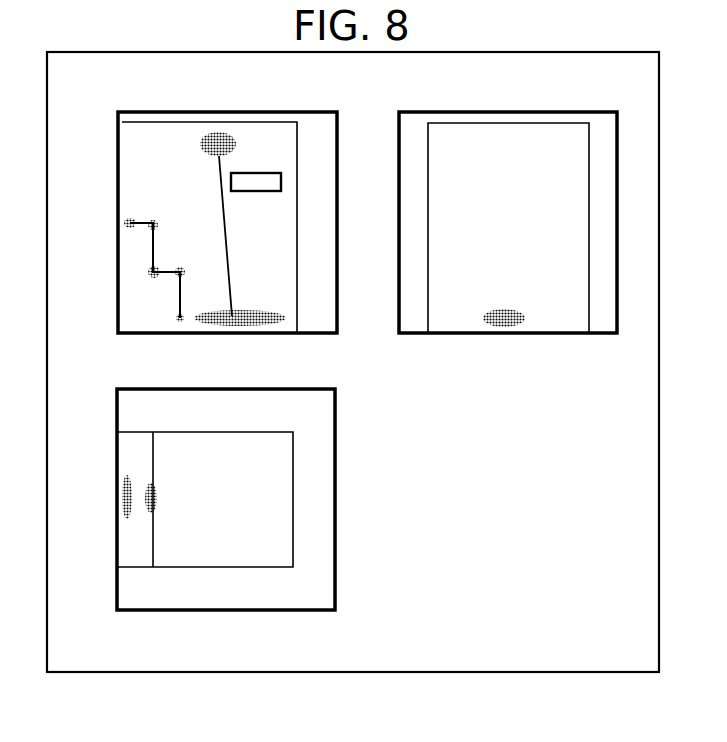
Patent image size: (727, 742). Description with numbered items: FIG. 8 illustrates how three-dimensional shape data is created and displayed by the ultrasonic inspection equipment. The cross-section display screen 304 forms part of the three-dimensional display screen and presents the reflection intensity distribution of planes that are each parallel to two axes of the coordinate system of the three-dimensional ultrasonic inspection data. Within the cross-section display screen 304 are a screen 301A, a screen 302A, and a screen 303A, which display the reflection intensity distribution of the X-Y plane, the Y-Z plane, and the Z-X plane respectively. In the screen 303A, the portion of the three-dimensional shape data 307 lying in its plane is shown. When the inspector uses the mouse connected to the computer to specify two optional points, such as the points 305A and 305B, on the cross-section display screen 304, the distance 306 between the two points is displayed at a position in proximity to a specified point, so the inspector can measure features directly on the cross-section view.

The screen 301A is at (222, 90).
The screen 302A is at (532, 90).
The screen 303A is at (335, 513).
The cross-section display screen 304 is at (472, 672).
The point 305A is at (202, 143).
The point 305B is at (240, 313).
The distance 306 is at (283, 183).
The three-dimensional shape data 307 is at (293, 447).